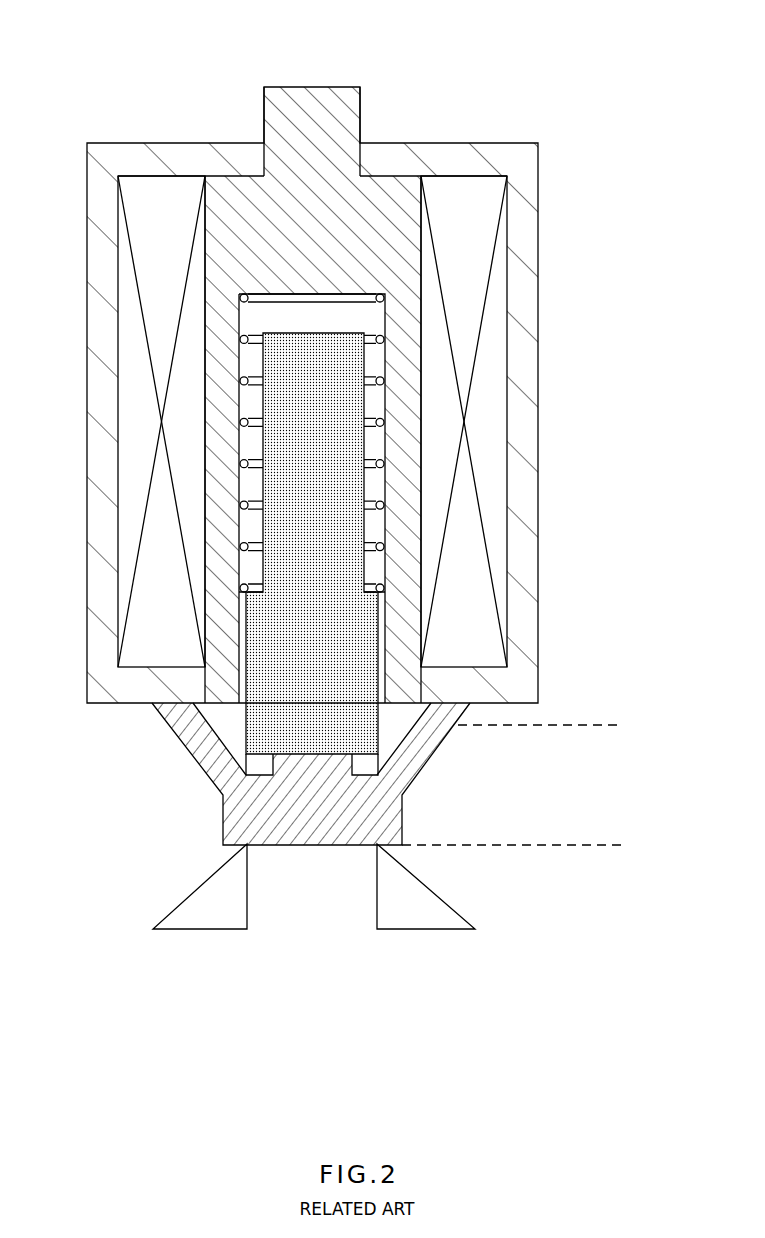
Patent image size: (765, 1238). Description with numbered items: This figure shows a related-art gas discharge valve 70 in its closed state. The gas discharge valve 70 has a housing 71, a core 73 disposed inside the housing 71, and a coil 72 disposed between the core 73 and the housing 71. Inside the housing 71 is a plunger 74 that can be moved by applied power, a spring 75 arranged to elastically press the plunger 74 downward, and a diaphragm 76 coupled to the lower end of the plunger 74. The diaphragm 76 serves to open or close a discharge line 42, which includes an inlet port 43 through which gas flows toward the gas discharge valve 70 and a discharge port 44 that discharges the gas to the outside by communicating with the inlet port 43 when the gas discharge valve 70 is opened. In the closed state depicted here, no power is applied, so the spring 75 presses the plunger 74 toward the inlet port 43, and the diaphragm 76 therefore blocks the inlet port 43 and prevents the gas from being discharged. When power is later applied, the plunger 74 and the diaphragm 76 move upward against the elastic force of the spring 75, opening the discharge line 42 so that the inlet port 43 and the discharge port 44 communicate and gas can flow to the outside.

The gas discharge valve 70 is at (65, 43).
The housing 71 is at (525, 158).
The coil 72 is at (490, 230).
The core 73 is at (375, 188).
The plunger 74 is at (360, 617).
The spring 75 is at (382, 462).
The diaphragm 76 is at (390, 815).
The discharge port 44 is at (592, 762).
The inlet port 43 is at (320, 877).
The discharge line 42 is at (314, 953).